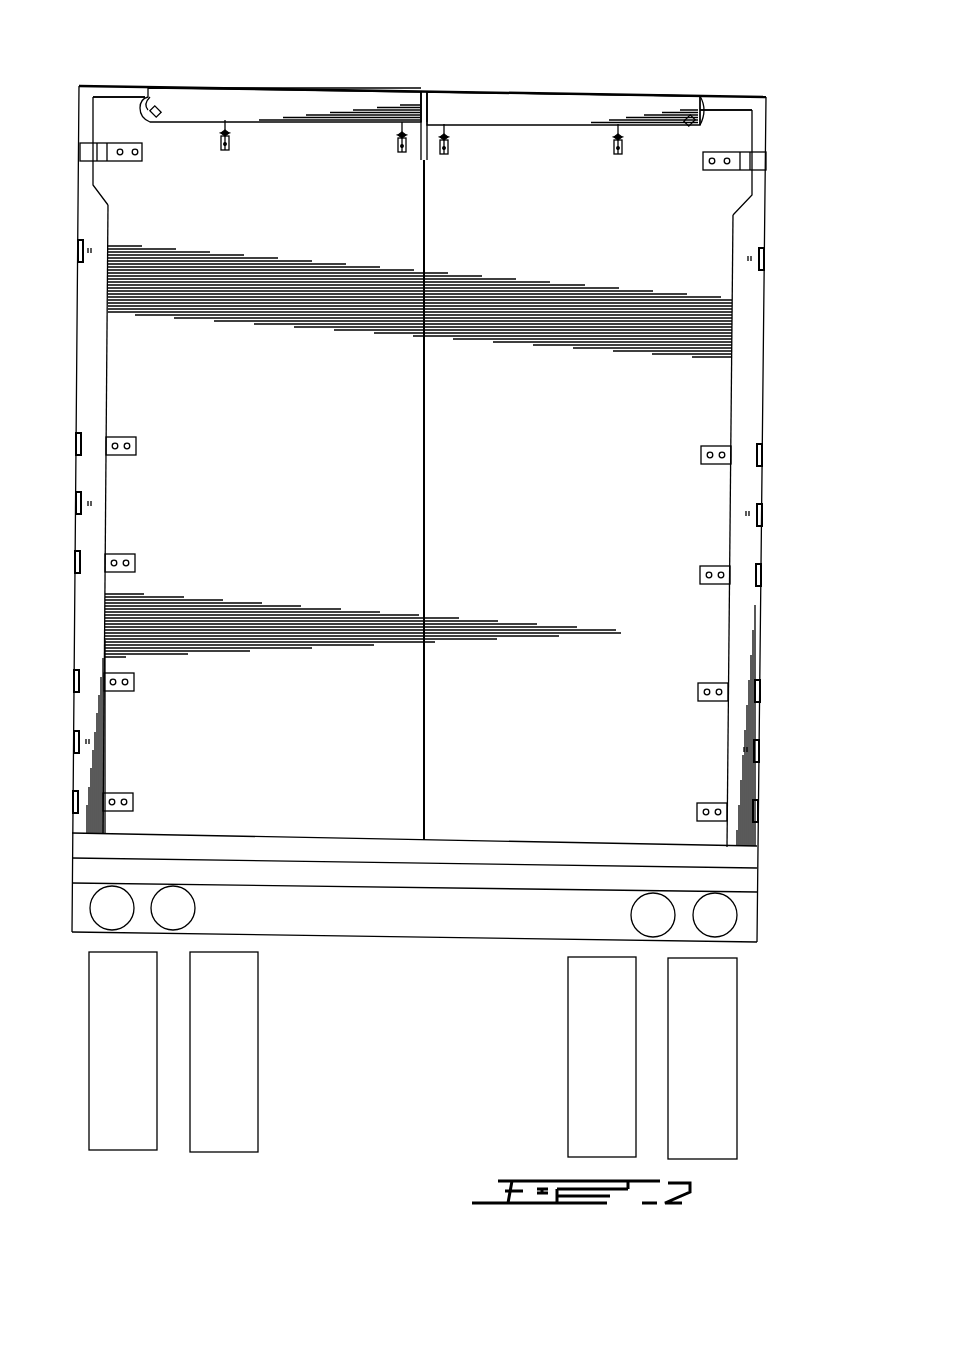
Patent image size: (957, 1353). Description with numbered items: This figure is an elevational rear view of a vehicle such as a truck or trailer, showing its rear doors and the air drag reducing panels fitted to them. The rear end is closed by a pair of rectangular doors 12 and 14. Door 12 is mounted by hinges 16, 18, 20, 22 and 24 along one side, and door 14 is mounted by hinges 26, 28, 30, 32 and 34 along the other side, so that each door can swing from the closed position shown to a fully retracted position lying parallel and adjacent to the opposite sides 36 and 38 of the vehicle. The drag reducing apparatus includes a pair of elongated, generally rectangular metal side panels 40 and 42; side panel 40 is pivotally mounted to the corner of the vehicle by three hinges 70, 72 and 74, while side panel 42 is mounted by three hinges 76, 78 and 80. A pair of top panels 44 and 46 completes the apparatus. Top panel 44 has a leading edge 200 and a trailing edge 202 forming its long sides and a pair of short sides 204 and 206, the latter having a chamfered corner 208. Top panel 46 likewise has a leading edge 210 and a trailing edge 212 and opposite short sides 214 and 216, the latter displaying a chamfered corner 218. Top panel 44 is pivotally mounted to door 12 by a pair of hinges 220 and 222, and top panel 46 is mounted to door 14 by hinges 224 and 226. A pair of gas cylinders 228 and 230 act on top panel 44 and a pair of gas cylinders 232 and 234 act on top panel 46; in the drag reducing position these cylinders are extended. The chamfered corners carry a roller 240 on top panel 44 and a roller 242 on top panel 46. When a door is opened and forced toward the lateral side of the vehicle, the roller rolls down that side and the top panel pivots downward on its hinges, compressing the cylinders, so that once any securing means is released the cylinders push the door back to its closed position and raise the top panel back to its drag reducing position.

The door 12 is at (191, 334).
The door 14 is at (628, 382).
The hinge 16 is at (101, 160).
The hinge 18 is at (76, 441).
The hinge 20 is at (75, 563).
The hinge 22 is at (74, 680).
The hinge 24 is at (74, 800).
The hinge 26 is at (770, 160).
The hinge 28 is at (762, 455).
The hinge 30 is at (760, 576).
The hinge 32 is at (760, 689).
The hinge 34 is at (758, 808).
The side of the vehicle 36 is at (79, 108).
The side of the vehicle 38 is at (767, 130).
The side panel 40 is at (95, 378).
The side panel 42 is at (742, 398).
The top panel 44 is at (329, 95).
The top panel 46 is at (607, 98).
The hinge 70 is at (77, 250).
The hinge 72 is at (75, 505).
The hinge 74 is at (74, 742).
The hinge 76 is at (766, 260).
The hinge 78 is at (760, 513).
The hinge 80 is at (758, 747).
The leading edge 200 is at (267, 88).
The trailing edge 202 is at (297, 122).
The short side 204 is at (419, 100).
The short side 206 is at (146, 98).
The chamfered corner 208 is at (145, 108).
The leading edge 210 is at (522, 92).
The trailing edge 212 is at (513, 126).
The short side 214 is at (428, 100).
The short side 216 is at (717, 96).
The chamfered corner 218 is at (697, 118).
The hinge 220 is at (224, 152).
The hinge 222 is at (402, 154).
The hinge 224 is at (443, 156).
The hinge 226 is at (620, 156).
The gas cylinder 228 is at (230, 127).
The gas cylinder 230 is at (396, 128).
The gas cylinder 232 is at (450, 132).
The gas cylinder 234 is at (616, 130).
The roller 240 is at (153, 122).
The roller 242 is at (698, 127).